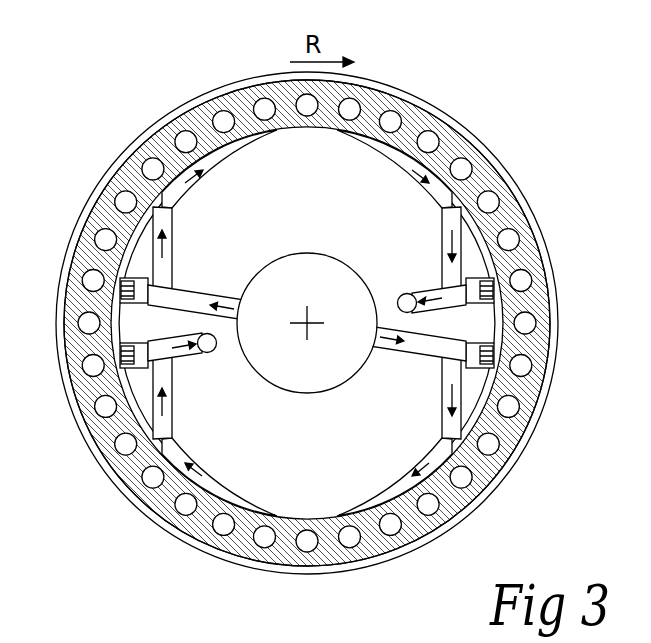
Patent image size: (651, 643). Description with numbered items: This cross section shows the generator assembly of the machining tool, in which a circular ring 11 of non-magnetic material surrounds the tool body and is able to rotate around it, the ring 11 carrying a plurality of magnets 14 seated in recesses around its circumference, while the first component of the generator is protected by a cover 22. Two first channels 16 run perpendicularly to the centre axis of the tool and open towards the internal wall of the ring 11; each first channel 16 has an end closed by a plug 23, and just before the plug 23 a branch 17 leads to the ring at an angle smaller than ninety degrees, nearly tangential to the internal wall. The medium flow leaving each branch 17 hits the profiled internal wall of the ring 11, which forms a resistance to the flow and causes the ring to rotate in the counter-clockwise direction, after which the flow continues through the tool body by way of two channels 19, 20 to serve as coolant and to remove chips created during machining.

The circular ring 11 is at (203, 122).
The magnet 14 is at (264, 108).
The first channel 16 is at (200, 302).
The branch 17 is at (165, 272).
The channel 19 is at (404, 306).
The channel 20 is at (210, 350).
The cover 22 is at (138, 137).
The plug 23 is at (130, 280).